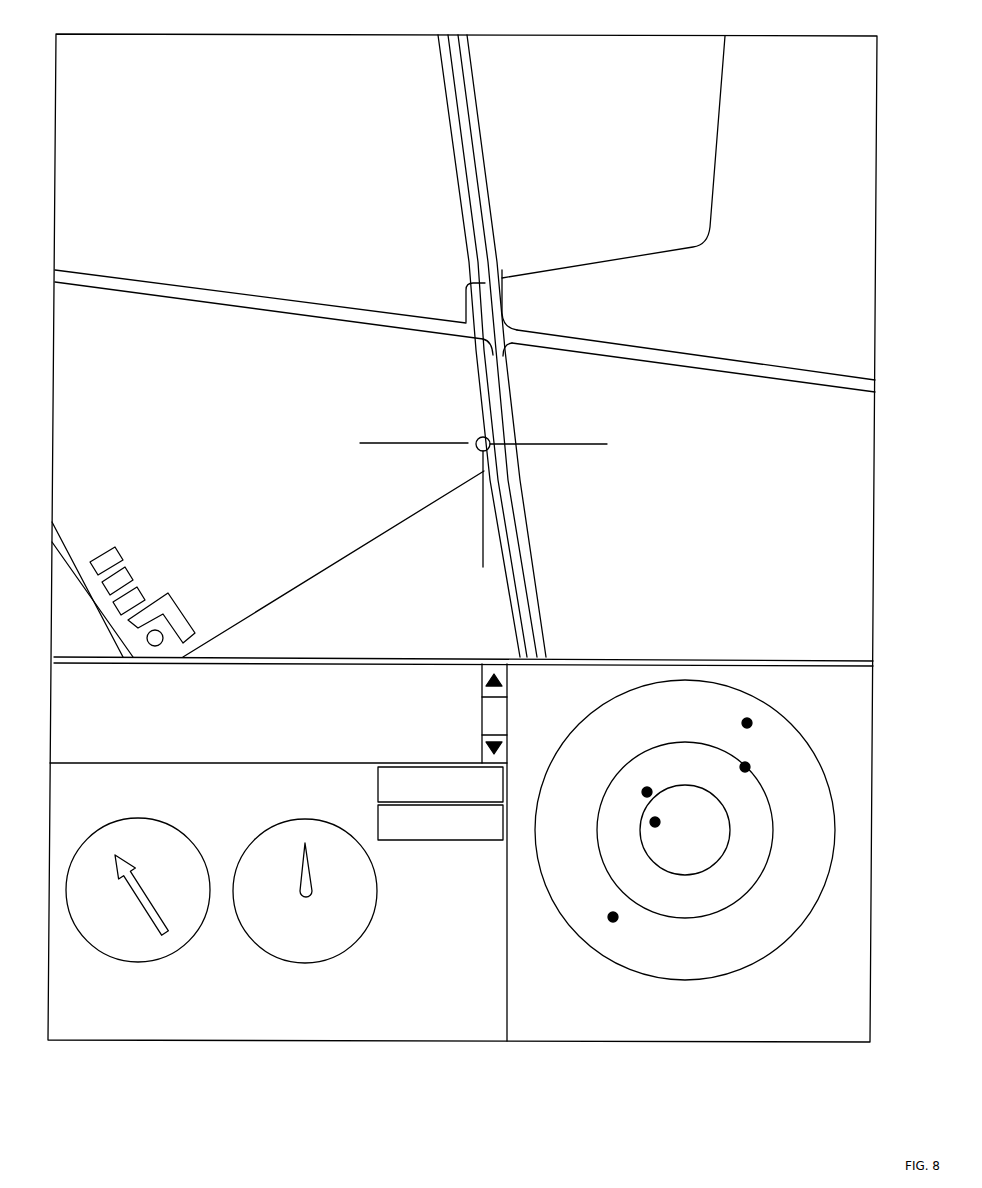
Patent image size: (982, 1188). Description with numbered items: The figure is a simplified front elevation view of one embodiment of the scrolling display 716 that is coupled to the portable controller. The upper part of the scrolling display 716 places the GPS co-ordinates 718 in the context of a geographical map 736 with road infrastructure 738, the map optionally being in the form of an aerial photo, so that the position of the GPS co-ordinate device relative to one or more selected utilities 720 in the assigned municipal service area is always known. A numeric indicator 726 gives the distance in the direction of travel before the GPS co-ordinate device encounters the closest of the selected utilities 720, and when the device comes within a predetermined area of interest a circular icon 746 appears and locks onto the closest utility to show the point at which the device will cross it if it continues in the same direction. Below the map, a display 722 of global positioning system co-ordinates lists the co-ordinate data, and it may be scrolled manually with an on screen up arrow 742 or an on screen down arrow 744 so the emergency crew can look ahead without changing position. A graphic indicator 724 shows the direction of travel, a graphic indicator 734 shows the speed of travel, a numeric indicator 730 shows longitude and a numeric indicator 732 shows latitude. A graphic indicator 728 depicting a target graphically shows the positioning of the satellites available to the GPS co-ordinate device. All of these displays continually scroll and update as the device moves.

The scrolling display 716 is at (581, 1080).
The GPS co-ordinates 718 is at (567, 443).
The selected utilities 720 is at (437, 62).
The display of global positioning system co-ordinates 722 is at (253, 730).
The graphic indicator 724 is at (167, 942).
The numeric indicator 726 is at (381, 415).
The graphic indicator 728 is at (733, 948).
The numeric indicator 730 is at (378, 778).
The numeric indicator 732 is at (487, 838).
The graphic indicator 734 is at (335, 942).
The geographical map 736 is at (225, 58).
The road infrastructure 738 is at (672, 357).
The on screen up arrow 742 is at (503, 677).
The on screen down arrow 744 is at (505, 753).
The circular icon 746 is at (477, 451).